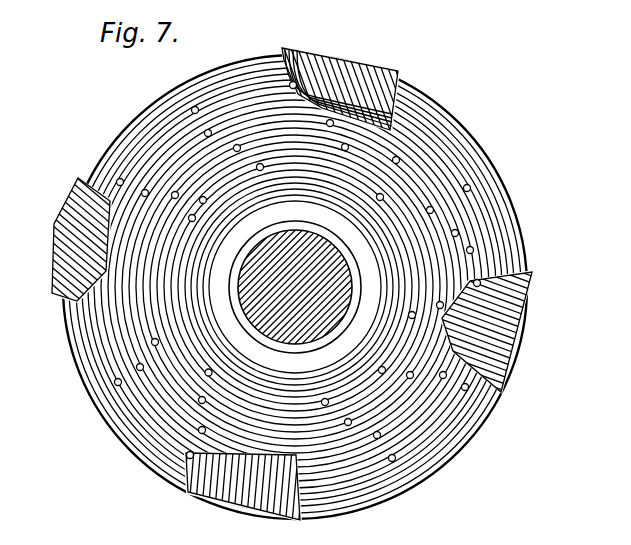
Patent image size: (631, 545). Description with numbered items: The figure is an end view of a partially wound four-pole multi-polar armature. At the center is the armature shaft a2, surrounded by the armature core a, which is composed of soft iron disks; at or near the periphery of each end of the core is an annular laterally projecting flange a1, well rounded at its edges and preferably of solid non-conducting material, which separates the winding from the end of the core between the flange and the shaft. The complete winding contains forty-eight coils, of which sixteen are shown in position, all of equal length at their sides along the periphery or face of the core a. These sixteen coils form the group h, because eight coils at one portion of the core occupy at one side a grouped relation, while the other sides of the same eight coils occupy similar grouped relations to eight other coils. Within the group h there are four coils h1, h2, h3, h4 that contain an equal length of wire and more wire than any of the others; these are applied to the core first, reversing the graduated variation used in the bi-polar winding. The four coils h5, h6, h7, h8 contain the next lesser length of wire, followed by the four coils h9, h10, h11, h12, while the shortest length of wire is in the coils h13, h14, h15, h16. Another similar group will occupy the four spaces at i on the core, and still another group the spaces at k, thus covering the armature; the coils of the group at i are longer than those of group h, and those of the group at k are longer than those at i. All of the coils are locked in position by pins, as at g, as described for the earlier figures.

The group of coils h is at (296, 272).
The coil h1 is at (388, 230).
The coil h2 is at (240, 185).
The coil h3 is at (195, 335).
The coil h4 is at (345, 380).
The coil h5 is at (395, 200).
The coil h6 is at (203, 180).
The coil h7 is at (183, 403).
The coil h8 is at (402, 385).
The coil h9 is at (402, 168).
The coil h10 is at (170, 178).
The coil h11 is at (193, 430).
The coil h12 is at (417, 388).
The coil h13 is at (398, 137).
The coil h14 is at (137, 180).
The coil h15 is at (178, 462).
The coil h16 is at (448, 397).
The spaces for third coil group k is at (290, 286).
The spaces for second coil group i is at (292, 283).
The pins g is at (196, 109).
The armature core a is at (295, 275).
The annular laterally projecting flange a1 is at (498, 197).
The armature shaft a2 is at (295, 287).